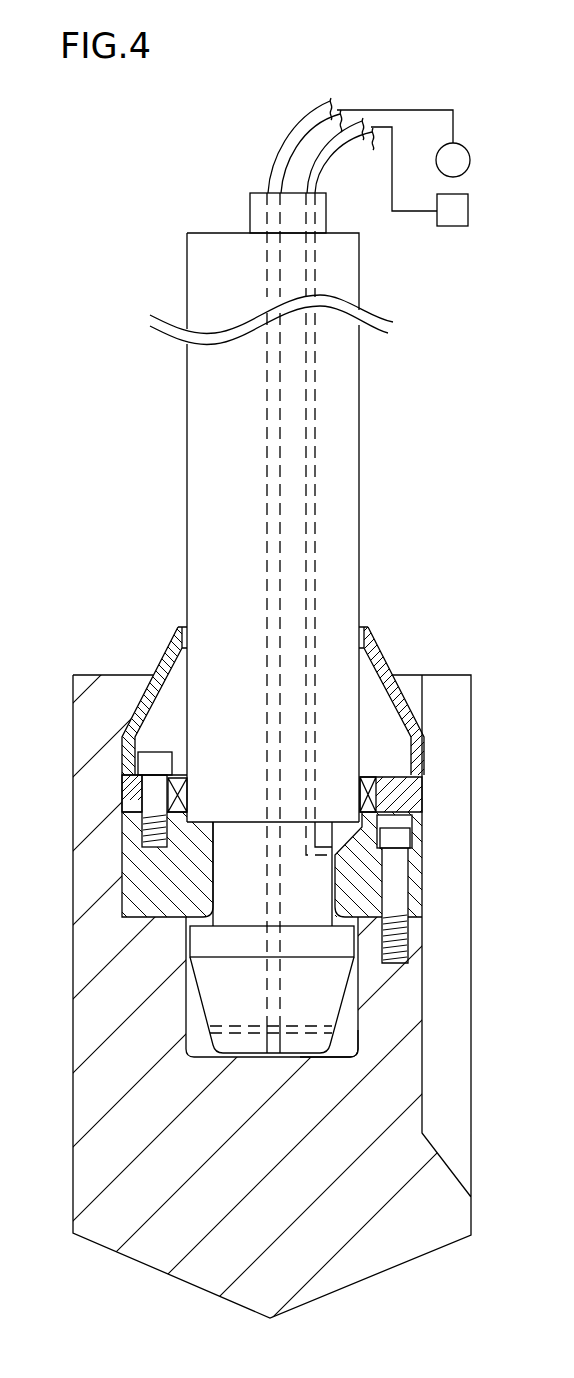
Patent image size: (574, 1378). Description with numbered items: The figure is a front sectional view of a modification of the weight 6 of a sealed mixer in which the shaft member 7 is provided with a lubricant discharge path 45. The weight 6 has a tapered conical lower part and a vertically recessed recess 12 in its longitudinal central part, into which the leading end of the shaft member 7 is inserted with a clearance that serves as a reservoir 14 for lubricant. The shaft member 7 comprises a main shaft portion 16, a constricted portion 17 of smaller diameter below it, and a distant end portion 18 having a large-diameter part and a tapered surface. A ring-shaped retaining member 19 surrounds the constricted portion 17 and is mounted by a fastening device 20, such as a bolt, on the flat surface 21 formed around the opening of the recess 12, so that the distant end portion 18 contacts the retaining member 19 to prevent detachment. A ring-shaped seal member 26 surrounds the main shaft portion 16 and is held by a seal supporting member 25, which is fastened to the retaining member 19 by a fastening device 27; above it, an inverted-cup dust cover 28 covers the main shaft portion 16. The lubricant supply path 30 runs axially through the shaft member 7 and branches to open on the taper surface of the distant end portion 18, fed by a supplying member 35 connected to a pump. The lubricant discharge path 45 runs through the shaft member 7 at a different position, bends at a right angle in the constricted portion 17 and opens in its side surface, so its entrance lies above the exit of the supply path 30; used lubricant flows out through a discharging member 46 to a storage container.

The weight 6 is at (430, 1168).
The shaft member 7 is at (299, 623).
The recess 12 is at (194, 1011).
The reservoir 14 is at (355, 1047).
The main shaft portion 16 is at (345, 451).
The constricted portion 17 is at (312, 906).
The distant end portion 18 is at (330, 1000).
The retaining member 19 is at (422, 855).
The fastening device 20 is at (402, 952).
The flat surface 21 is at (150, 903).
The seal supporting member 25 is at (123, 804).
The seal member 26 is at (170, 791).
The fastening device 27 is at (148, 763).
The dust cover 28 is at (144, 699).
The lubricant supply path 30 is at (280, 557).
The supplying member 35 is at (302, 132).
The lubricant discharge path 45 is at (313, 497).
The discharging member 46 is at (340, 142).